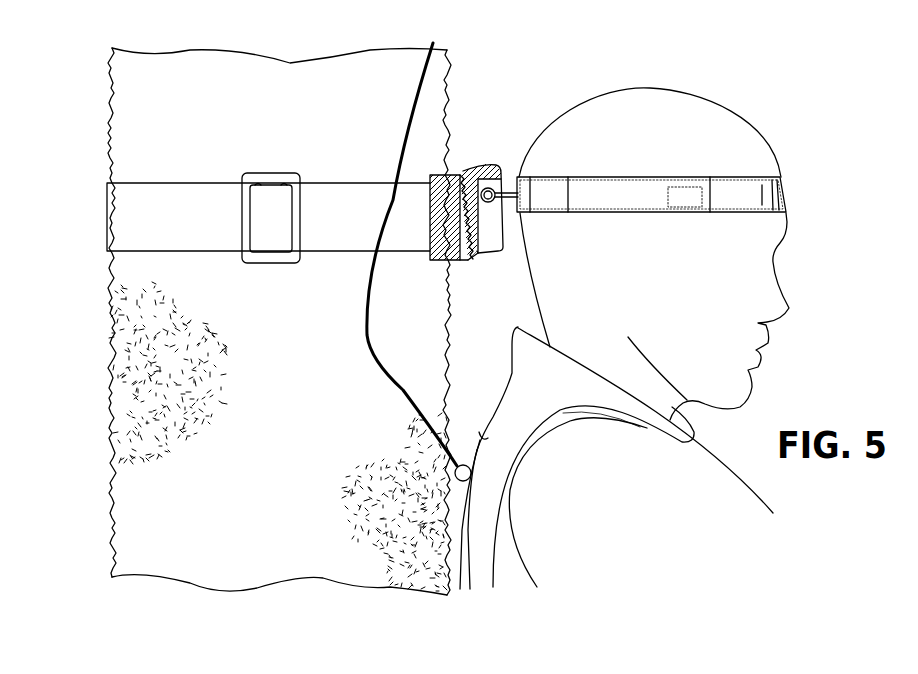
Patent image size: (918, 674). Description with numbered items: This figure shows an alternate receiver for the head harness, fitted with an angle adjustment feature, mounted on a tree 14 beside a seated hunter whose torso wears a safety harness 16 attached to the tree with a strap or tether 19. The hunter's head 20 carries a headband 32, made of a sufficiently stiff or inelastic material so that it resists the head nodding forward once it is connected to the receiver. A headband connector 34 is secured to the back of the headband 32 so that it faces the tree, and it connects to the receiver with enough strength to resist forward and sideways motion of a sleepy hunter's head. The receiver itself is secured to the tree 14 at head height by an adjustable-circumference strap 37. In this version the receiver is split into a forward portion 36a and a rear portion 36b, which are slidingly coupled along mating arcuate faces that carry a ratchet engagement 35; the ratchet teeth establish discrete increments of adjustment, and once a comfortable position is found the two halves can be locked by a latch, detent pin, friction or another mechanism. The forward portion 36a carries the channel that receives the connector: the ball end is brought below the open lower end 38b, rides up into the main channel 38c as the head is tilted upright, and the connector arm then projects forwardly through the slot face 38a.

The tree 14 is at (233, 83).
The safety harness 16 is at (483, 537).
The strap or tether 19 is at (410, 107).
The head 20 is at (640, 115).
The headband 32 is at (635, 190).
The headband connector 34 is at (507, 172).
The ratchet engagement 35 is at (472, 270).
The forward portion of the receiver 36a is at (473, 165).
The rear portion of the receiver 36b is at (440, 177).
The adjustable-circumference strap 37 is at (120, 226).
The slot face 38a is at (505, 222).
The open lower end 38b is at (485, 253).
The main channel 38c is at (483, 222).